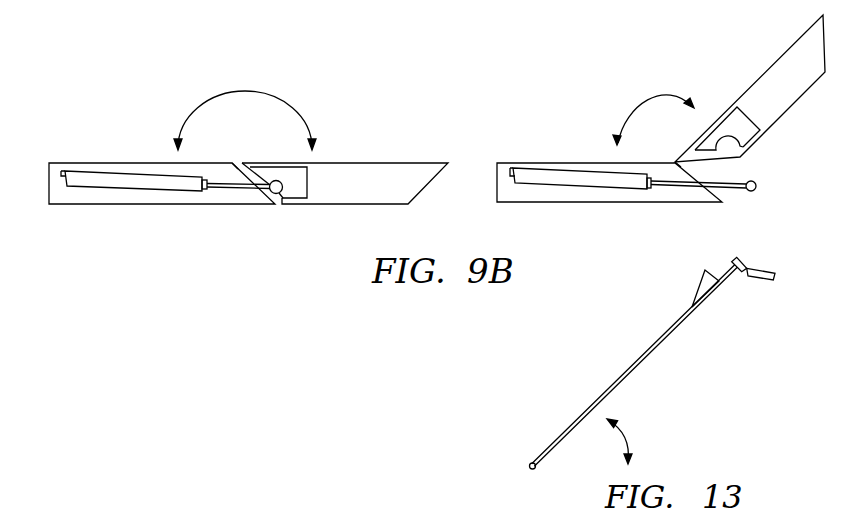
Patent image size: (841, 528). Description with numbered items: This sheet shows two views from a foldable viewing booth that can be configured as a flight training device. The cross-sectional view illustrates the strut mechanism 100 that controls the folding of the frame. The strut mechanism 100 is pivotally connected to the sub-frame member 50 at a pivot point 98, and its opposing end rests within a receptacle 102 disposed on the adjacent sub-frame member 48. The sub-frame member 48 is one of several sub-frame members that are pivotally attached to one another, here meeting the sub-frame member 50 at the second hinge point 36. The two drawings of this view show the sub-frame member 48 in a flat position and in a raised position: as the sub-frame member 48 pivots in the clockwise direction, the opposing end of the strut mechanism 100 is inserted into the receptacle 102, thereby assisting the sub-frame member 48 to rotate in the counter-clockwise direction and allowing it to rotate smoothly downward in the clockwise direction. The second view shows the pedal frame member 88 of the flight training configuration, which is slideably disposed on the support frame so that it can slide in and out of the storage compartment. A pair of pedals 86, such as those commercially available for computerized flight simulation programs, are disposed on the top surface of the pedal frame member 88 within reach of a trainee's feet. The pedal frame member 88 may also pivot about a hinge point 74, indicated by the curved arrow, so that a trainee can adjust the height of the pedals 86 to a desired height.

In FIG. 9B, the second hinge point 36 is at (237, 162).
In FIG. 9B, the sub-frame member 48 is at (397, 163).
In FIG. 9B, the sub-frame member 50 is at (143, 163).
In FIG. 9B, the pivot point 98 is at (65, 175).
In FIG. 9B, the strut mechanism 100 is at (122, 188).
In FIG. 9B, the receptacle 102 is at (302, 195).
In FIG. 13, the hinge point 74 is at (533, 461).
In FIG. 13, the pedals 86 is at (697, 290).
In FIG. 13, the pedal frame member 88 is at (648, 357).